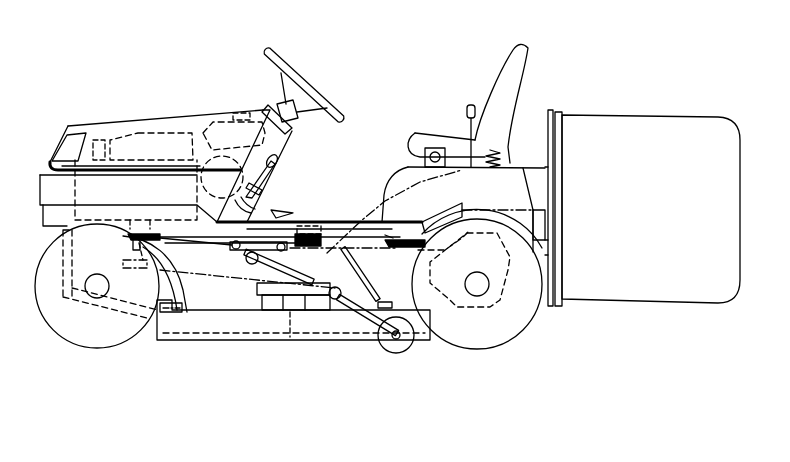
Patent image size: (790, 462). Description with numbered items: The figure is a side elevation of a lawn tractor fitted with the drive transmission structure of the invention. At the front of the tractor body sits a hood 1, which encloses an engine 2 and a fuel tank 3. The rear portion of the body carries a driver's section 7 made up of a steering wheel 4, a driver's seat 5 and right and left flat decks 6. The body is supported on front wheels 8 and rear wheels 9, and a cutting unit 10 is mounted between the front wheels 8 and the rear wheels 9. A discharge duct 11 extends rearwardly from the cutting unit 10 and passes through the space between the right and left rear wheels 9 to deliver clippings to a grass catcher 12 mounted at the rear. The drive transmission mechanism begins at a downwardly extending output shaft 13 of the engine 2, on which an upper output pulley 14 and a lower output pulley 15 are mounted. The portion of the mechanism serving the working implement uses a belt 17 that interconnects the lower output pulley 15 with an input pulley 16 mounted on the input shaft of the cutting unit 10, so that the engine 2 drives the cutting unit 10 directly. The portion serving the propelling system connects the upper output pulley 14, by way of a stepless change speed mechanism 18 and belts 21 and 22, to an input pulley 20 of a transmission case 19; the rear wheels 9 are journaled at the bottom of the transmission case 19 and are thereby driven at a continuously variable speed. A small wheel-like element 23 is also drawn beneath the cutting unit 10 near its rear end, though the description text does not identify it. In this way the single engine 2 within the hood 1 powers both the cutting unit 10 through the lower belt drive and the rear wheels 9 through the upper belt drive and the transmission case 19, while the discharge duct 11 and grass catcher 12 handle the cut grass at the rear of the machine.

The hood 1 is at (167, 112).
The engine 2 is at (100, 137).
The fuel tank 3 is at (217, 130).
The steering wheel 4 is at (337, 112).
The driver's seat 5 is at (517, 80).
The flat decks 6 is at (345, 222).
The driver's section 7 is at (428, 85).
The front wheels 8 is at (62, 340).
The rear wheels 9 is at (538, 315).
The cutting unit 10 is at (253, 340).
The discharge duct 11 is at (533, 163).
The grass catcher 12 is at (640, 115).
The output shaft 13 is at (147, 244).
The upper output pulley 14 is at (186, 313).
The lower output pulley 15 is at (160, 305).
The input pulley 16 is at (263, 301).
The belt 17 is at (233, 280).
The stepless change speed mechanism 18 is at (322, 222).
The transmission case 19 is at (492, 308).
The input pulley 20 is at (418, 239).
The belt 21 is at (178, 238).
The belt 22 is at (352, 258).
The gauge wheel 23 is at (402, 354).